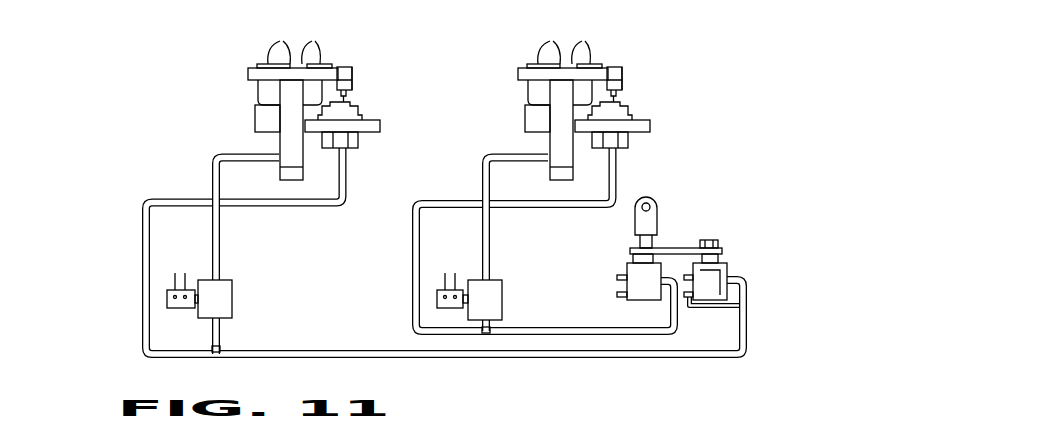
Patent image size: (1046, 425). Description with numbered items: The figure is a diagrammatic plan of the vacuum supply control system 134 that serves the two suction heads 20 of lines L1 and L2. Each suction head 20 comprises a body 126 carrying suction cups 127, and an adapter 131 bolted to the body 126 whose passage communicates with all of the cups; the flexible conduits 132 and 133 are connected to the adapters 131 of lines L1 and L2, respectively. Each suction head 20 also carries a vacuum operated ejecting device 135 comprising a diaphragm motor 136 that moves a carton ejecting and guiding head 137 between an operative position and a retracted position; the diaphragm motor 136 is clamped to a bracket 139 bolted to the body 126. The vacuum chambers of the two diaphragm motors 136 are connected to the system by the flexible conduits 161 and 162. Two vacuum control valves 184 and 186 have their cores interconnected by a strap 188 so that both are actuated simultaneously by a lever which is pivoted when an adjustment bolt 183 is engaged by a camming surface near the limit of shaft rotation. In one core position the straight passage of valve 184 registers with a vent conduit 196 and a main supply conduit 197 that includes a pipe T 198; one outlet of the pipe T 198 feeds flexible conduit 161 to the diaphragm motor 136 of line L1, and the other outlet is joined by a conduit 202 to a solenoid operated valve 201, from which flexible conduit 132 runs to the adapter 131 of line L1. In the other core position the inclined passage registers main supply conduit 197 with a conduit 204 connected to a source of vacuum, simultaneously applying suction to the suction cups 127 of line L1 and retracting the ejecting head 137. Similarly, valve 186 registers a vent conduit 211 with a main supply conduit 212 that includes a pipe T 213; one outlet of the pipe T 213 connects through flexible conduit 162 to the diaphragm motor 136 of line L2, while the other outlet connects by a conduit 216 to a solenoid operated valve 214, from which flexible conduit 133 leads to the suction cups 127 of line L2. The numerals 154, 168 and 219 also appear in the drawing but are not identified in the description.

The suction head 20 is at (248, 72).
The body 126 is at (267, 95).
The suction cups 127 is at (429, 41).
The adapter 131 is at (285, 140).
The flexible conduit 132 is at (482, 162).
The flexible conduit 133 is at (213, 173).
The vacuum supply control system 134 is at (138, 343).
The vacuum operated ejecting device 135 is at (357, 80).
The diaphragm motor 136 is at (362, 113).
The carton ejecting and guiding head 137 is at (354, 68).
The bracket 139 is at (263, 115).
The stem 154 is at (348, 100).
The flexible conduit 161 is at (617, 180).
The flexible conduit 162 is at (343, 178).
The switch 168 is at (339, 67).
The adjustment bolt 183 is at (656, 200).
The vacuum control valve 184 is at (627, 267).
The vacuum control valve 186 is at (718, 275).
The strap 188 is at (670, 250).
The vent conduit 196 is at (617, 278).
The main supply conduit 197 is at (672, 308).
The pipe T 198 is at (483, 337).
The solenoid operated valve 201 is at (495, 288).
The conduit 202 is at (488, 323).
The conduit 204 is at (617, 294).
The vent conduit 211 is at (727, 263).
The main supply conduit 212 is at (673, 352).
The pipe T 213 is at (217, 348).
The solenoid operated valve 214 is at (223, 292).
The conduit 216 is at (221, 327).
The conduit 219 is at (690, 306).